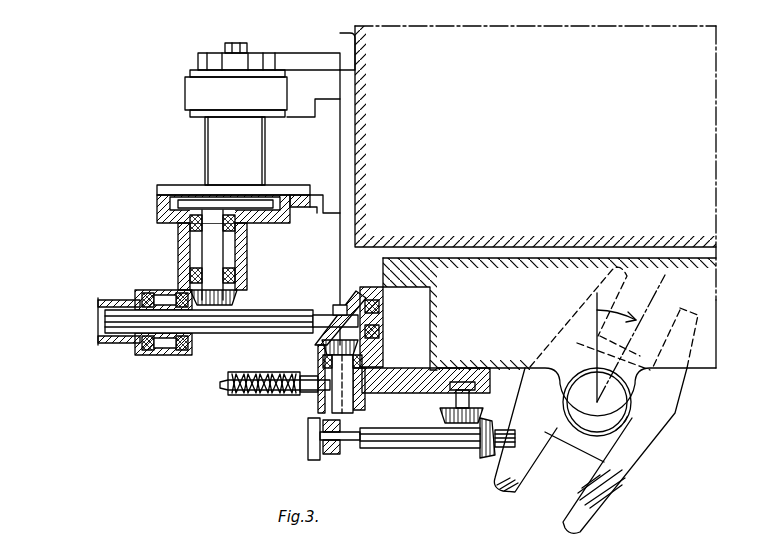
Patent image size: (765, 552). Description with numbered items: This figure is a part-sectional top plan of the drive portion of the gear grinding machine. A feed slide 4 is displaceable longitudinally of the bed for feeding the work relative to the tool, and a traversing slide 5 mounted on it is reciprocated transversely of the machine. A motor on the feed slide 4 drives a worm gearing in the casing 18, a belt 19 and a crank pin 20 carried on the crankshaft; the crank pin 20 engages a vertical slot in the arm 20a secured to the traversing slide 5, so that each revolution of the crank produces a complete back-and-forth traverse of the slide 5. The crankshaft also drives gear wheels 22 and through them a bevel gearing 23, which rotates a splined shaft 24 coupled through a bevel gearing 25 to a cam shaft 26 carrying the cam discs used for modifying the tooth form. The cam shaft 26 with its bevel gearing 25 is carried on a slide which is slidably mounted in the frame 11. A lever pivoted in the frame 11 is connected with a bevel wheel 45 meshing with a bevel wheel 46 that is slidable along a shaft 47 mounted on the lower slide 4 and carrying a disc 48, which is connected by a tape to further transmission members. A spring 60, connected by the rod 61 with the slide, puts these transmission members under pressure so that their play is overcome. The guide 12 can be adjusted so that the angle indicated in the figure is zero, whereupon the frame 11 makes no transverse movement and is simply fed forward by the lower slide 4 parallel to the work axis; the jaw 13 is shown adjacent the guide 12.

The feed slide 4 is at (340, 155).
The traversing slide 5 is at (709, 125).
The frame 11 is at (693, 277).
The guide 12 is at (650, 457).
The gripper arm 13 is at (562, 447).
The casing 18 is at (631, 338).
The belt 19 is at (236, 127).
The crank pin 20 is at (244, 45).
The arm 20a is at (291, 60).
The gear wheels 22 is at (185, 205).
The bevel gearing 23 is at (198, 338).
The splined shaft 24 is at (274, 313).
The bevel gearing 25 is at (348, 305).
The cam shaft 26 is at (340, 397).
The bevel wheel 45 is at (440, 412).
The bevel wheel 46 is at (488, 455).
The shaft 47 is at (430, 446).
The disc 48 is at (312, 432).
The spring 60 is at (258, 383).
The rod 61 is at (228, 387).